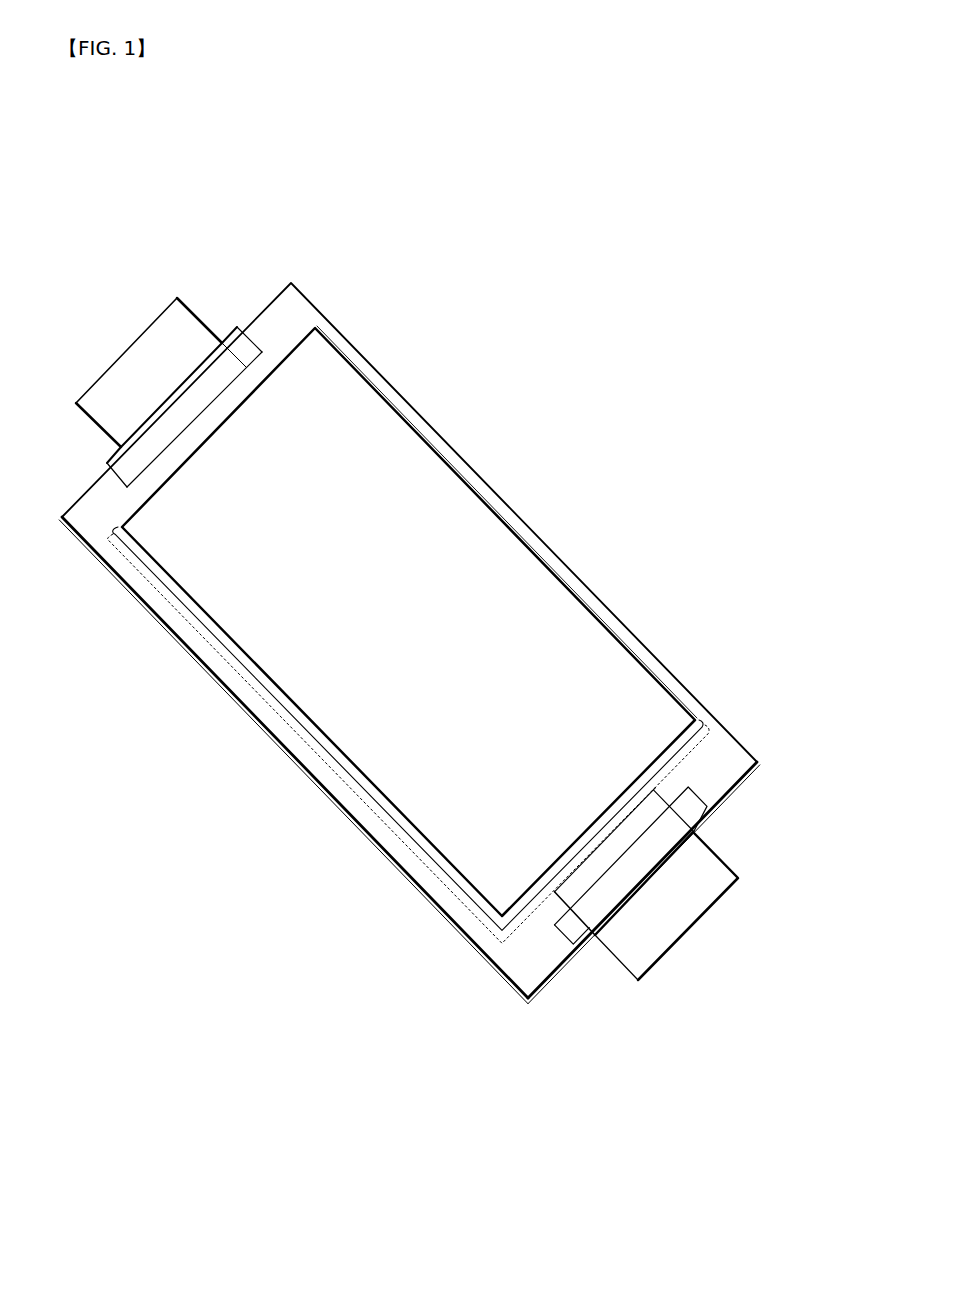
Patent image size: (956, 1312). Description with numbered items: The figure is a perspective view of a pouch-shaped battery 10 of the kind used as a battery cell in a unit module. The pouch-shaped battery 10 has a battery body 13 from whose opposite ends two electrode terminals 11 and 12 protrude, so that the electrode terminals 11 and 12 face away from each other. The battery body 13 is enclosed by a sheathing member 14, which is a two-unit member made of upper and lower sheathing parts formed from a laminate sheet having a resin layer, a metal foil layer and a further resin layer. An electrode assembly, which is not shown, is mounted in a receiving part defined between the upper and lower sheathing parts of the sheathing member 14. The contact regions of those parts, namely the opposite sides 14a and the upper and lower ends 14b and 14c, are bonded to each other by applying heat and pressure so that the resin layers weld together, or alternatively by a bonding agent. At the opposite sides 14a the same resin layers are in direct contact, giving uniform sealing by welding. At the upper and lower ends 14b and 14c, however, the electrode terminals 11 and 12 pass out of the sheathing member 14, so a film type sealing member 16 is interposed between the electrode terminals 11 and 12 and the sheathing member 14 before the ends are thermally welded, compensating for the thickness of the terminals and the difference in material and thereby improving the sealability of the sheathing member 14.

The pouch-shaped battery 10 is at (121, 183).
The electrode terminal 11 is at (145, 353).
The electrode terminal 12 is at (700, 927).
The battery body 13 is at (498, 540).
The sheathing member 14 is at (451, 633).
The opposite sides 14a is at (292, 310).
The upper end 14b is at (405, 860).
The lower end 14c is at (540, 953).
The film type sealing member 16 is at (713, 813).